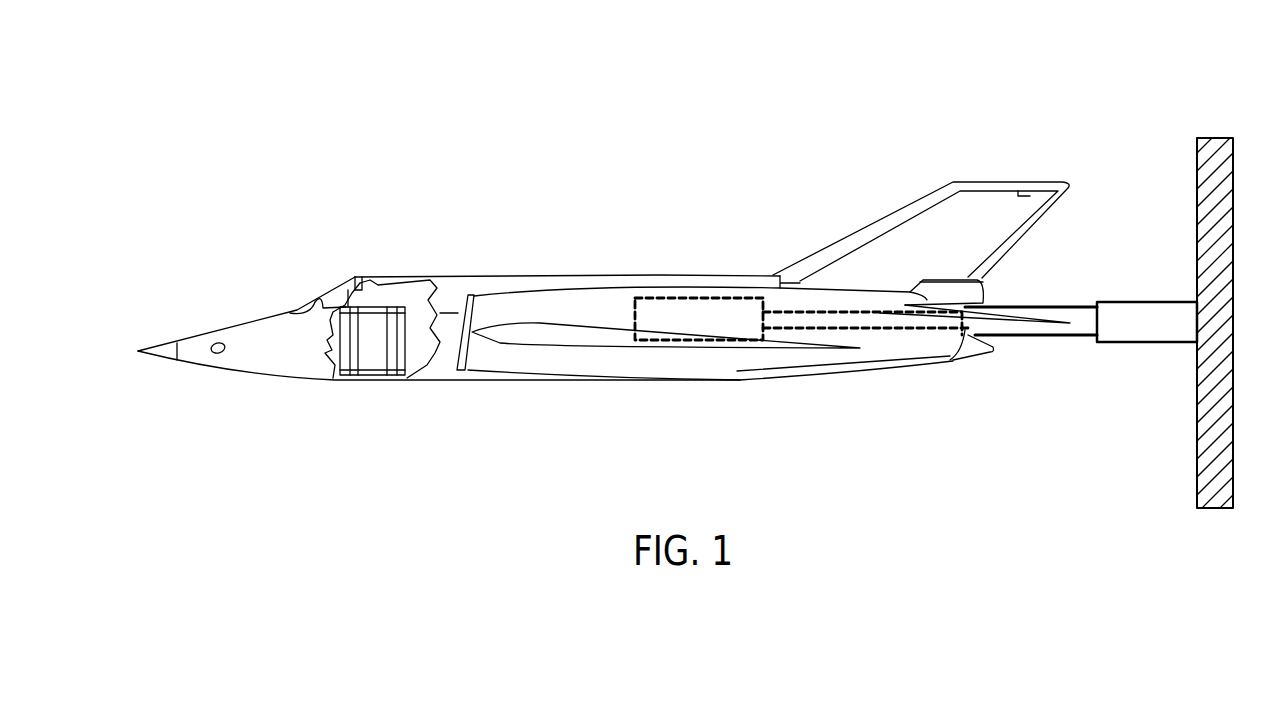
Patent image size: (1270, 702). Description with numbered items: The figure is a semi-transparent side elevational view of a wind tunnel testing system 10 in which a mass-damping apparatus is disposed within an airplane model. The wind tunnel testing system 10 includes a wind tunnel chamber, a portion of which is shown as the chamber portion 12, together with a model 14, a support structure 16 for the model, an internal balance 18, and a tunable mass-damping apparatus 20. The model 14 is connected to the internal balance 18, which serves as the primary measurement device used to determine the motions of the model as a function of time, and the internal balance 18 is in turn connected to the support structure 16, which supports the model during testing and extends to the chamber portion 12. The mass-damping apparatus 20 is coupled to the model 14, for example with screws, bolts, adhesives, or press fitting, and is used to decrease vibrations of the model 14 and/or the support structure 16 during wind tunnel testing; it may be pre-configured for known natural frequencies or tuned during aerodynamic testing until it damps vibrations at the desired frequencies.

The wind tunnel testing system 10 is at (393, 118).
The wind tunnel chamber portion 12 is at (1197, 173).
The model 14 is at (555, 260).
The support structure 16 is at (1048, 303).
The internal balance 18 is at (720, 345).
The tunable mass-damping apparatus 20 is at (373, 377).